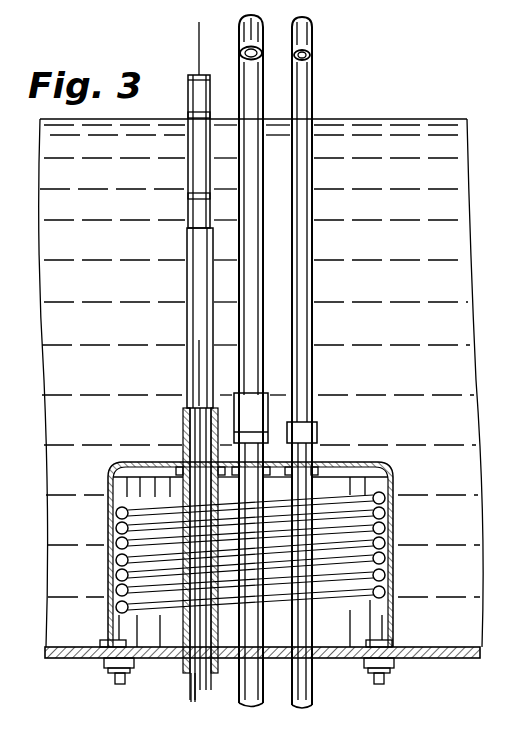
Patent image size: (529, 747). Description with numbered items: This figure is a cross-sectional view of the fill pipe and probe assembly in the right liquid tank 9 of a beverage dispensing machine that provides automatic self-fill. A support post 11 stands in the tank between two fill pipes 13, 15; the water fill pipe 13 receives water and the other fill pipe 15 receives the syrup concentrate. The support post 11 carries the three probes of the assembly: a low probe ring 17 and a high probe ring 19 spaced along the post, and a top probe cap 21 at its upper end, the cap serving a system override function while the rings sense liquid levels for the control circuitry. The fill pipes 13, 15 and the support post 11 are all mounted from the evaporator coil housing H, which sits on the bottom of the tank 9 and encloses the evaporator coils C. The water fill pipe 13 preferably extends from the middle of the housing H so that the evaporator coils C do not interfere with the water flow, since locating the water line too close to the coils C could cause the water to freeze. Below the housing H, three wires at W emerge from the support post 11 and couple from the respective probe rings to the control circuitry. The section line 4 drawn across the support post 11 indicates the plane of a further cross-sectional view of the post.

The section line 4- 4 is at (199, 38).
The right liquid tank 9 is at (462, 575).
The support post 11 is at (186, 240).
The water fill pipe 13 is at (238, 38).
The syrup fill pipe 15 is at (313, 76).
The low probe ring 17 is at (188, 195).
The high probe ring 19 is at (190, 113).
The top probe cap 21 is at (190, 77).
The evaporator coil housing H is at (395, 490).
The evaporator coils C is at (118, 562).
The wires W is at (188, 690).